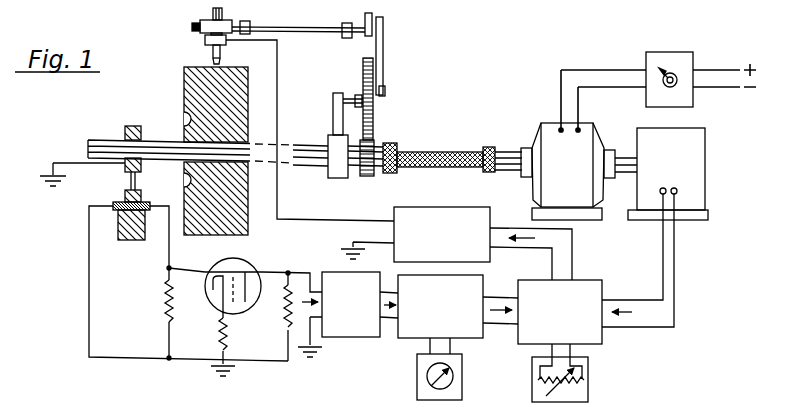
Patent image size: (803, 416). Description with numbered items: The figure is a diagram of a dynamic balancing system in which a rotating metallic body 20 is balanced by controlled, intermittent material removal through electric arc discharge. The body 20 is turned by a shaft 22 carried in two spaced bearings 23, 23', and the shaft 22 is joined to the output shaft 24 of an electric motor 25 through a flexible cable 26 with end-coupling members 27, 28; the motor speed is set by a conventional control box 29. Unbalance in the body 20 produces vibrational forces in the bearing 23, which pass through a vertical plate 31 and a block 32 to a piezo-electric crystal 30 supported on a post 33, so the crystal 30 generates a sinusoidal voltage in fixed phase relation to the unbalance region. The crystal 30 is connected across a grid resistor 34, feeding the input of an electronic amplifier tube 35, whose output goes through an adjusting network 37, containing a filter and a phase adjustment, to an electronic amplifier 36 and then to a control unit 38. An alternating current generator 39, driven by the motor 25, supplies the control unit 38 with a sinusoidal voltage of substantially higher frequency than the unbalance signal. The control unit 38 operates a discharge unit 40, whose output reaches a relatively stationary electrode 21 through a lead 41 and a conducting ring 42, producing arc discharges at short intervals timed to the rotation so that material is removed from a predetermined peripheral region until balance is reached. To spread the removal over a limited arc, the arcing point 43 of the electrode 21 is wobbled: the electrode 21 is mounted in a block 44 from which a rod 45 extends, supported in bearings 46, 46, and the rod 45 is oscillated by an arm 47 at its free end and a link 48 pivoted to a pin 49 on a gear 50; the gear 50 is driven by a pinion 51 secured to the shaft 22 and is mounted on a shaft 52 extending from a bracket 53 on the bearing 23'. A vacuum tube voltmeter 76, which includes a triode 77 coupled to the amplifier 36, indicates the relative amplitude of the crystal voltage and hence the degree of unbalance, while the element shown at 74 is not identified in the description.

The metallic body 20 is at (185, 94).
The electrode 21 is at (213, 15).
The shaft 22 is at (173, 141).
The bearing 23 is at (119, 140).
The bearing 23' is at (323, 173).
The output shaft 24 is at (511, 152).
The electric motor 25 is at (568, 171).
The flexible cable 26 is at (440, 152).
The end-coupling member 27 is at (392, 144).
The end-coupling member 28 is at (490, 173).
The control box 29 is at (672, 52).
The piezo-electric crystal 30 is at (118, 202).
The vertical plate 31 is at (137, 182).
The block 32 is at (143, 196).
The post 33 is at (126, 241).
The grid resistor 34 is at (167, 304).
The electronic amplifier tube 35 is at (248, 260).
The electronic amplifier 36 is at (440, 306).
The adjusting network 37 is at (348, 336).
The control unit 38 is at (560, 312).
The alternating current generator 39 is at (705, 140).
The discharge unit 40 is at (456, 243).
The lead 41 is at (278, 64).
The conducting ring 42 is at (205, 39).
The arcing point 43 is at (221, 62).
The block 44 is at (226, 19).
The rod 45 is at (301, 27).
The bearings 46 is at (250, 22).
The arm 47 is at (366, 24).
The link 48 is at (384, 36).
The pin 49 is at (386, 88).
The gear 50 is at (363, 64).
The pinion 51 is at (365, 178).
The shaft 52 is at (352, 97).
The bracket 53 is at (335, 110).
The potentiometer 74 is at (586, 386).
The vacuum tube voltmeter 76 is at (463, 376).
The triode 77 is at (377, 413).